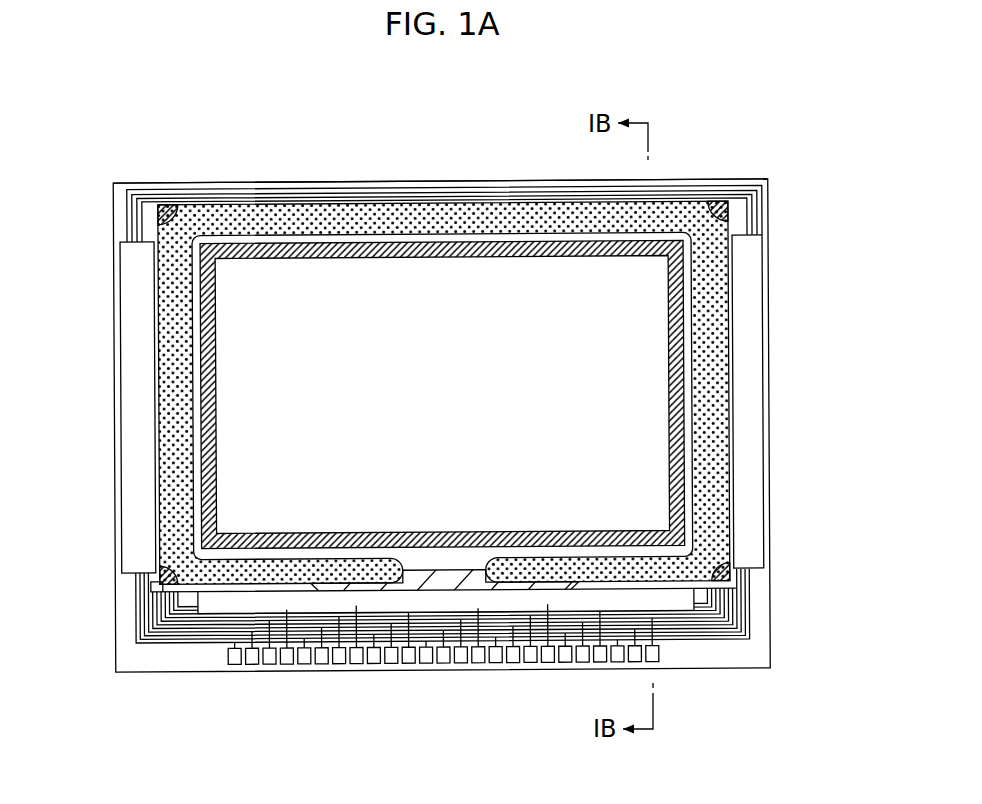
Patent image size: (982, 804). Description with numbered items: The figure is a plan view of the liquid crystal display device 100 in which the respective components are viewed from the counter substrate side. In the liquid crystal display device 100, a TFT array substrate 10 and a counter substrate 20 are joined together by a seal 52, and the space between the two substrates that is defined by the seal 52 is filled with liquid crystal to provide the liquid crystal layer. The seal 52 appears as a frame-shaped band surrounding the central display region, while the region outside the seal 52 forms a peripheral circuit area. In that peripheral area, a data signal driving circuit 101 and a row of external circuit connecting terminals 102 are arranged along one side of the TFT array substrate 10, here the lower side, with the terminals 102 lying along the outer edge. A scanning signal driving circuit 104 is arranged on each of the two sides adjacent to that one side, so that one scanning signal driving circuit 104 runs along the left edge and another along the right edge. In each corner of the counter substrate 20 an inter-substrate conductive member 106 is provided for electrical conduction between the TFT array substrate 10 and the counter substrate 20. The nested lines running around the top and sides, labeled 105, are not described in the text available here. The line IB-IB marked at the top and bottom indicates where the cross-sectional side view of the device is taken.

The liquid crystal display device 100 is at (750, 148).
The TFT array substrate 10 is at (445, 180).
The wiring lines 105 is at (323, 195).
The counter substrate 20 is at (537, 218).
The seal 52 is at (703, 345).
The scanning signal driving circuit 104 is at (132, 398).
The inter-substrate conductive member 106 is at (160, 210).
The data signal driving circuit 101 is at (240, 606).
The external circuit connecting terminals 102 is at (362, 650).